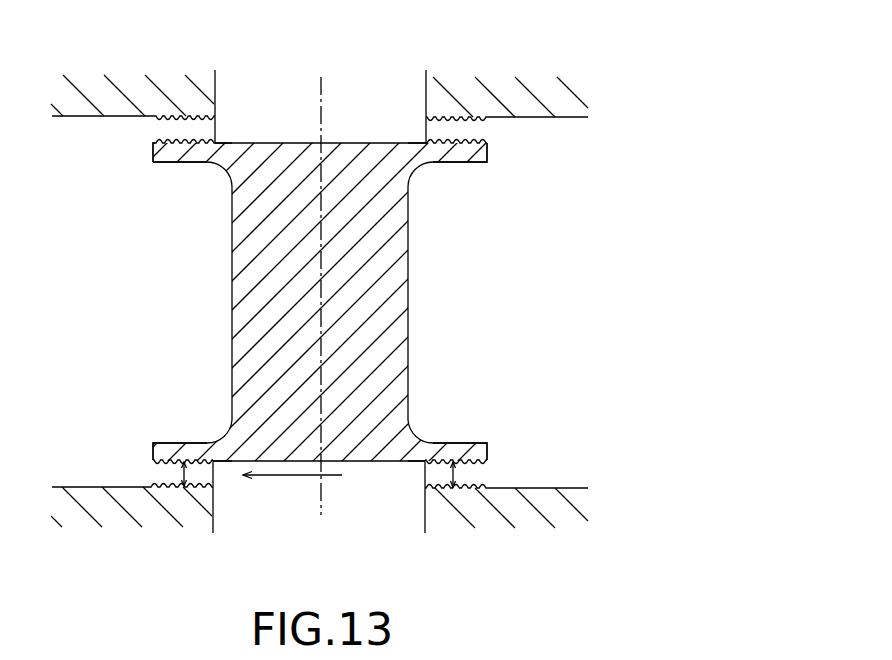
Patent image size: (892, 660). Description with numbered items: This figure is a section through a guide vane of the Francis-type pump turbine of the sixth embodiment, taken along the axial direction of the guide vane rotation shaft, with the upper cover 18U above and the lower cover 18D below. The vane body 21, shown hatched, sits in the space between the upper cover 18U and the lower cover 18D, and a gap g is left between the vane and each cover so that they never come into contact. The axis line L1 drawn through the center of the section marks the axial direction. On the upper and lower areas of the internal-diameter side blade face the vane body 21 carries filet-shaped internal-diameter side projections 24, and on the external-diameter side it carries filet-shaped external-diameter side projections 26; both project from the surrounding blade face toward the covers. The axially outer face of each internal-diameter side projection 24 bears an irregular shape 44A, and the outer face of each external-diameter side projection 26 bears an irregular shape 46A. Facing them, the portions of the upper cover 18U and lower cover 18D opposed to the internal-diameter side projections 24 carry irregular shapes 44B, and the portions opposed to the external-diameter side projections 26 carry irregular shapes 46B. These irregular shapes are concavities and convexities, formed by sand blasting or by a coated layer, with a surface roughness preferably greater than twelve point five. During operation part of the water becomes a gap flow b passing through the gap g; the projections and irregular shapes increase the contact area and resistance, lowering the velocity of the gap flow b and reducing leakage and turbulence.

The vane body 21 is at (410, 299).
The internal-diameter side projection 24 is at (165, 153).
The external-diameter side projection 26 is at (475, 155).
The irregular shape 44A is at (167, 128).
The irregular shape 44B is at (197, 123).
The irregular shape 46A is at (473, 128).
The irregular shape 46B is at (445, 125).
The upper cover 18U is at (134, 88).
The lower cover 18D is at (110, 513).
The center line L1 is at (322, 82).
The gap g is at (168, 487).
The gap flow b is at (283, 477).